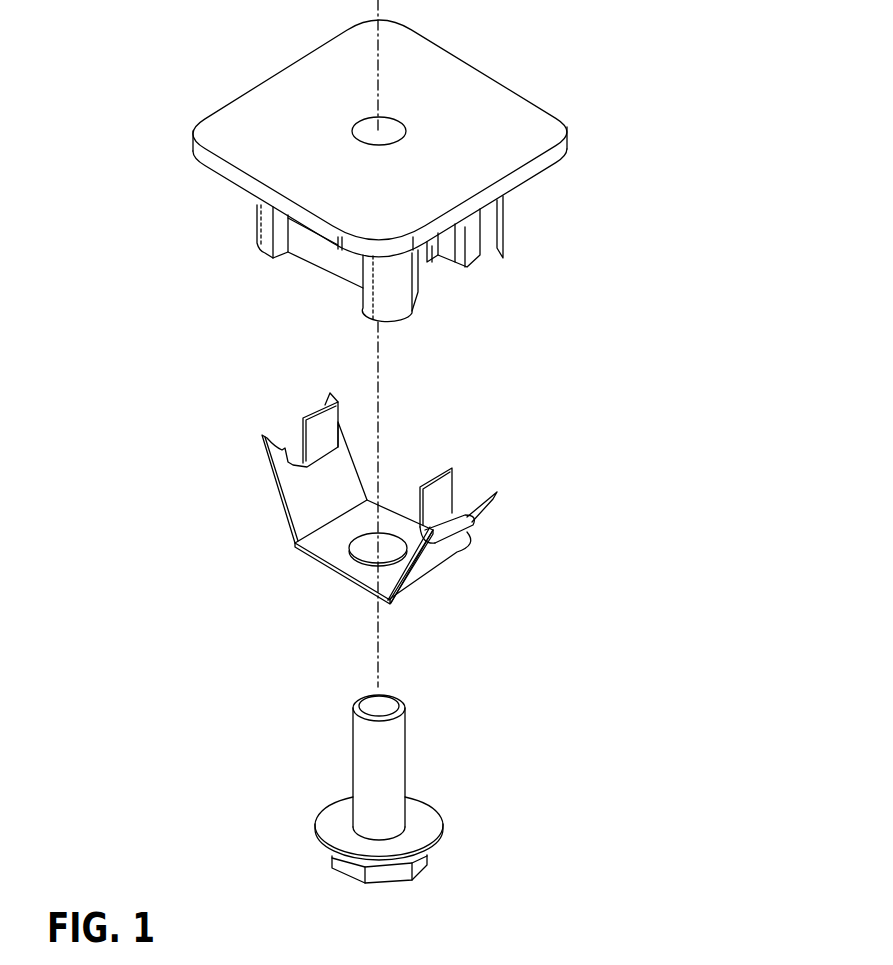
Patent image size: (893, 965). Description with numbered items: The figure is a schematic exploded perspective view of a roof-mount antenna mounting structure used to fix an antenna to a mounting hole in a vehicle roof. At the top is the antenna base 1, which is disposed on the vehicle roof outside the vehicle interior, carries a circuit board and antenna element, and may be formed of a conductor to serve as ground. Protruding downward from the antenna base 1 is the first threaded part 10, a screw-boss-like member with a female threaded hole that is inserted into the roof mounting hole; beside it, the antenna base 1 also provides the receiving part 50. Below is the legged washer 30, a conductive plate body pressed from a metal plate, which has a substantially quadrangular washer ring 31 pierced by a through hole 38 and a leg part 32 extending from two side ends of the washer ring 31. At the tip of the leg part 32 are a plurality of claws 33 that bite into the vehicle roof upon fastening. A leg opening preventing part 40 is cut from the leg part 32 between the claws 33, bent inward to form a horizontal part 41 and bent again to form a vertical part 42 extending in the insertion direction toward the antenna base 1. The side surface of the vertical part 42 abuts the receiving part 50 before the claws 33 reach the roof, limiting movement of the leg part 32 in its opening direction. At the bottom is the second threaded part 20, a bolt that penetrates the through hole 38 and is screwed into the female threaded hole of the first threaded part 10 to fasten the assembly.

The antenna base 1 is at (494, 88).
The first threaded part 10 is at (322, 258).
The receiving part 50 is at (433, 260).
The legged washer 30 is at (405, 452).
The washer ring 31 is at (327, 550).
The leg part 32 is at (293, 491).
The claws 33 is at (264, 436).
The through hole 38 is at (367, 556).
The leg opening preventing part 40 is at (477, 481).
The horizontal part 41 is at (447, 525).
The vertical part 42 is at (446, 487).
The second threaded part 20 is at (396, 765).